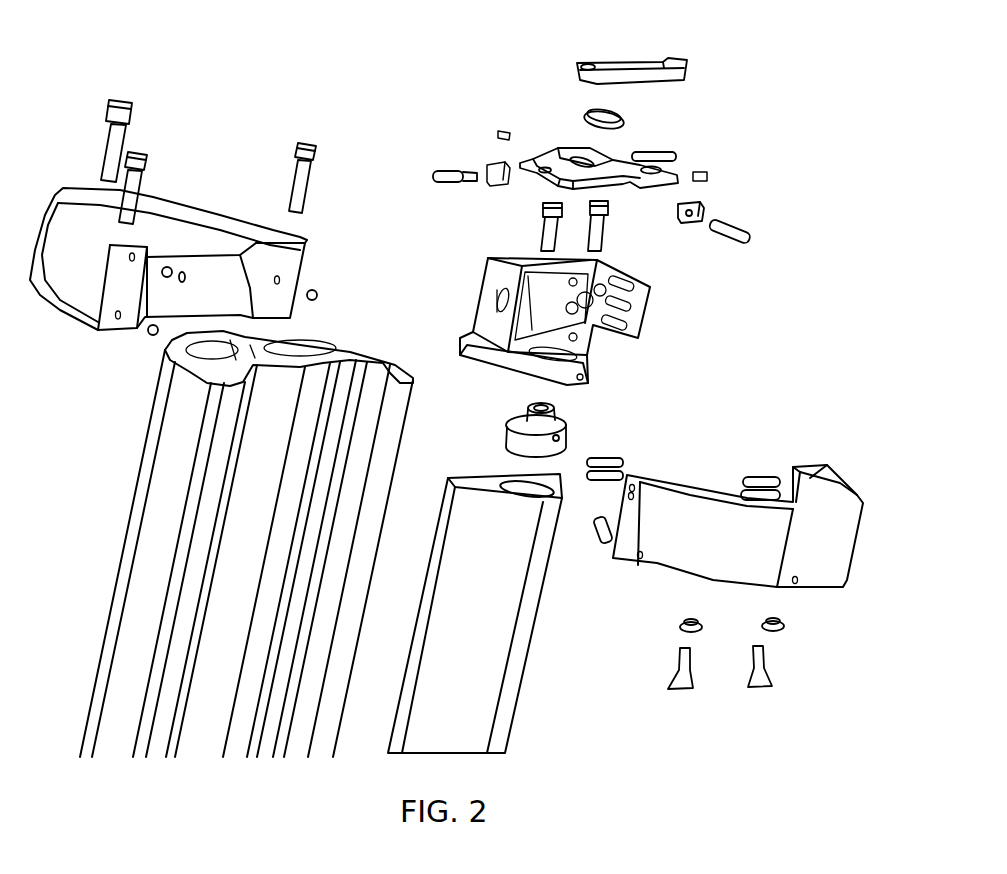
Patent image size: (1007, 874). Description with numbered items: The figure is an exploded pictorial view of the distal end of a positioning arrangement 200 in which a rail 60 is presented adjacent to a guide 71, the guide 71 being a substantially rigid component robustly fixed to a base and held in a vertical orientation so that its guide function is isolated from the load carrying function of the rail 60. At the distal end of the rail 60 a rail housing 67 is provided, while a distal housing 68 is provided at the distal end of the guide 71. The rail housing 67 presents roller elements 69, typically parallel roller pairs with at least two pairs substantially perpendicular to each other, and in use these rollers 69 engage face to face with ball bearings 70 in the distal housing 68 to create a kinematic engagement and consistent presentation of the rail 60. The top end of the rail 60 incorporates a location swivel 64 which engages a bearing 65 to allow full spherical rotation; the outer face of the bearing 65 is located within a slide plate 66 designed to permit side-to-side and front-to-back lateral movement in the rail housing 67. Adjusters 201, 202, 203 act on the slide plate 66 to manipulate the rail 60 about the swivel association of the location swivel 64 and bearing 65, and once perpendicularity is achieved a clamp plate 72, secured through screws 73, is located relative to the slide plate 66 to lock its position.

The mounting assembly 200 is at (357, 228).
The adjuster 201 is at (452, 170).
The adjuster 202 is at (713, 228).
The adjuster 203 is at (674, 150).
The rail 60 is at (488, 705).
The location swivel 64 is at (558, 416).
The bearing 65 is at (626, 123).
The slide plate 66 is at (680, 173).
The rail housing 67 is at (657, 578).
The distal housing 68 is at (238, 208).
The roller elements 69 is at (752, 476).
The ball bearings 70 is at (159, 329).
The guide 71 is at (152, 418).
The clamp plate 72 is at (688, 64).
The screws 73 is at (760, 660).